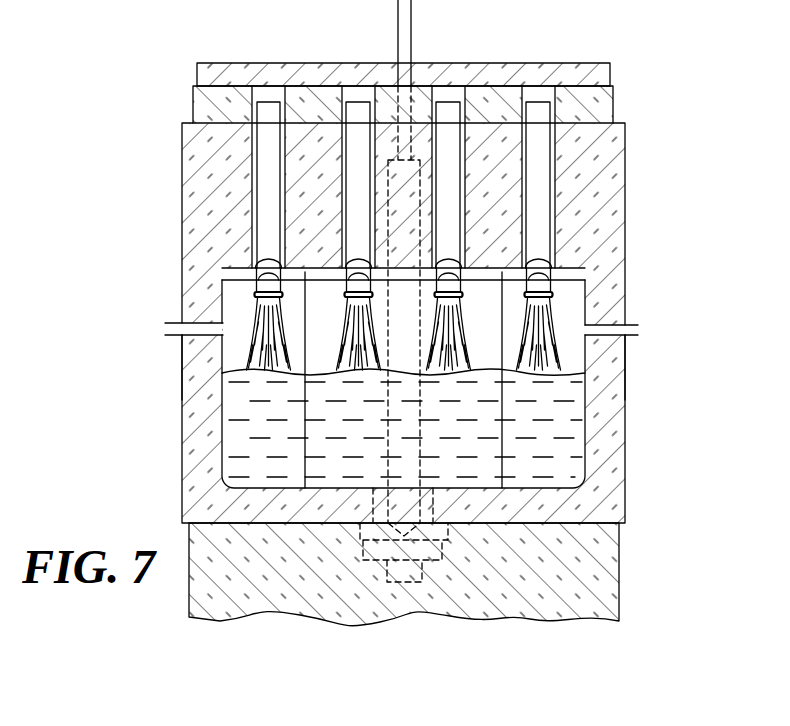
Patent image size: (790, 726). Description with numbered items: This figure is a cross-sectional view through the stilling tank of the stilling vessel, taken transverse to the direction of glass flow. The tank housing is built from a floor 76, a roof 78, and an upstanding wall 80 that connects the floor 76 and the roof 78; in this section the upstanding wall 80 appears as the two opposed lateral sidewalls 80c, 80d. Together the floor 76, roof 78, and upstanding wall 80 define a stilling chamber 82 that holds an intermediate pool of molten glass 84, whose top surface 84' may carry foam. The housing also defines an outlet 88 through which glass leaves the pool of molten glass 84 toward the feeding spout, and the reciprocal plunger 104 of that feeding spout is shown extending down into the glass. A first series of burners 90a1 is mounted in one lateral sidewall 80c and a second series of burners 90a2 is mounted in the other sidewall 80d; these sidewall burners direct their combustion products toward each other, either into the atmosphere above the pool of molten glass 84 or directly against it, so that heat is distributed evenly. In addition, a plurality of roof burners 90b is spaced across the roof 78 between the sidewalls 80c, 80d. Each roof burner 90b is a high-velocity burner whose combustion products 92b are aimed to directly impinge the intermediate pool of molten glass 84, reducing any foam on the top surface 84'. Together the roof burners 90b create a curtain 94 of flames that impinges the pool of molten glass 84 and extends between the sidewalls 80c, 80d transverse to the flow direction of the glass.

The floor 76 is at (551, 504).
The roof 78 is at (495, 148).
The upstanding wall 80 is at (196, 270).
The lateral sidewall 80c is at (190, 357).
The lateral sidewall 80d is at (604, 363).
The stilling chamber 82 is at (236, 398).
The intermediate pool of molten glass 84 is at (405, 429).
The top surface 84' is at (463, 314).
The outlet 88 is at (318, 370).
The first series of burners 90a1 is at (196, 322).
The second series of burners 90a2 is at (604, 324).
The roof burner 90b is at (468, 195).
The combustion products 92b is at (548, 272).
The curtain of flames 94 is at (248, 306).
The reciprocal plunger 104 is at (420, 400).